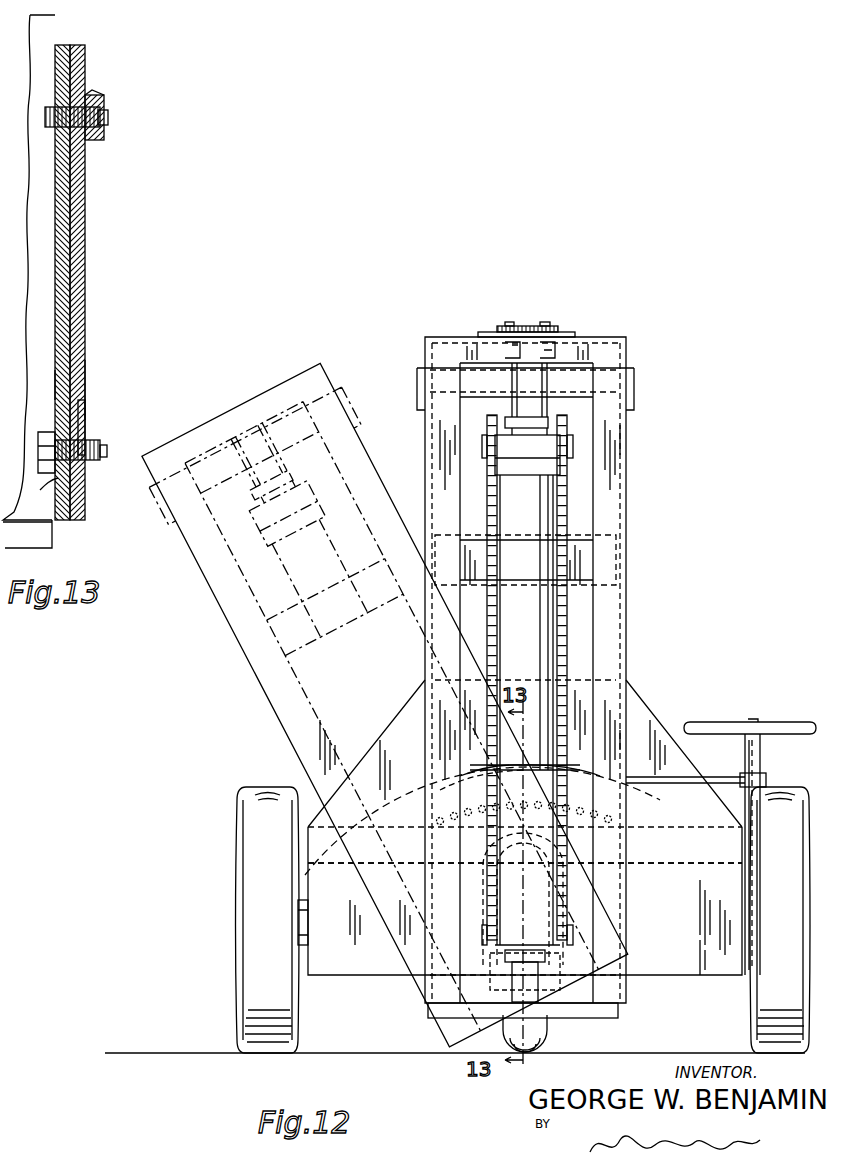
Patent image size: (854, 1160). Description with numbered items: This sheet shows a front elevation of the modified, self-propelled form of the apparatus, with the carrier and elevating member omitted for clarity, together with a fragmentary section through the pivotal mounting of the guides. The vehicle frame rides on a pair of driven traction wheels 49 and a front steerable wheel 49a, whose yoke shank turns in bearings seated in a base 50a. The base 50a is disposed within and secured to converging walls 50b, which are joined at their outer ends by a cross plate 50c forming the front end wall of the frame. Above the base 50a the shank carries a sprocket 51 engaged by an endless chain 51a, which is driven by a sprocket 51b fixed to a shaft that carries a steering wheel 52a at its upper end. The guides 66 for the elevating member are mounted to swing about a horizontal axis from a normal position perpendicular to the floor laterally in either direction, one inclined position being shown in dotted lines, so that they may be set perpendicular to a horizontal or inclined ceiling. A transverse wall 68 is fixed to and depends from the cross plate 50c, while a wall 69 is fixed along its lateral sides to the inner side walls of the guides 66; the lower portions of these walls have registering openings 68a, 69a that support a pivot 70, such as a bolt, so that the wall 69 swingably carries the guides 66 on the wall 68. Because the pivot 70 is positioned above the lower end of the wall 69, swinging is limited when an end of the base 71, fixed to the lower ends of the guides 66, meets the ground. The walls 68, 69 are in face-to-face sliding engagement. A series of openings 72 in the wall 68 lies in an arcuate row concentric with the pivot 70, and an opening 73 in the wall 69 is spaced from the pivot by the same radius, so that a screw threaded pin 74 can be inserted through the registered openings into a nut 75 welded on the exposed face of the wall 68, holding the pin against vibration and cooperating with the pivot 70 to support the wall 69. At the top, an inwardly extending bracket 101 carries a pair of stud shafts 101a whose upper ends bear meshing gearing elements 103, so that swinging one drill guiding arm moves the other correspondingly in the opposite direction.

In FIG. 12, the traction wheels 49 is at (243, 985).
In FIG. 12, the front steerable wheel 49a is at (546, 1034).
In FIG. 12, the base 50a is at (676, 828).
In FIG. 12, the converging walls 50b is at (658, 868).
In FIG. 13, the cross plate 50c is at (88, 244).
In FIG. 12, the sprocket 51 is at (558, 780).
In FIG. 12, the endless chain 51a is at (722, 778).
In FIG. 12, the sprocket 51b is at (762, 782).
In FIG. 12, the steering wheel 52a is at (785, 726).
In FIG. 12, the guides 66 is at (626, 624).
In FIG. 13, the transverse wall 68 is at (85, 378).
In FIG. 12, the transverse wall 68 is at (700, 976).
In FIG. 13, the opening 68a is at (84, 408).
In FIG. 13, the wall 69 is at (55, 388).
In FIG. 13, the opening 69a is at (35, 493).
In FIG. 13, the pivot 70 is at (106, 454).
In FIG. 12, the pivot 70 is at (497, 984).
In FIG. 13, the base 71 is at (50, 540).
In FIG. 12, the base 71 is at (615, 1018).
In FIG. 13, the openings 72 is at (86, 158).
In FIG. 12, the openings 72 is at (612, 810).
In FIG. 13, the opening 73 is at (64, 160).
In FIG. 13, the pin 74 is at (104, 118).
In FIG. 12, the pin 74 is at (550, 830).
In FIG. 13, the nut 75 is at (96, 100).
In FIG. 12, the bracket 101 is at (562, 330).
In FIG. 12, the stud shafts 101a is at (557, 306).
In FIG. 12, the gearing elements 103 is at (507, 321).